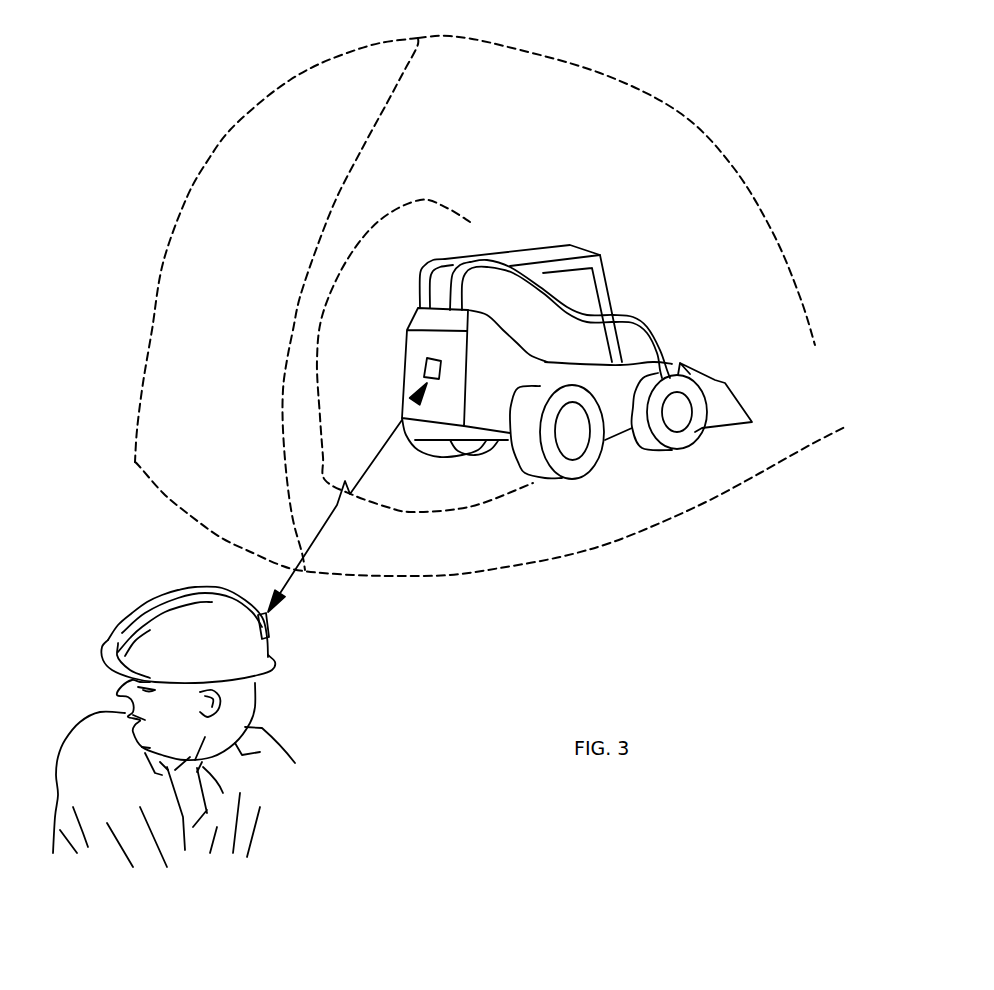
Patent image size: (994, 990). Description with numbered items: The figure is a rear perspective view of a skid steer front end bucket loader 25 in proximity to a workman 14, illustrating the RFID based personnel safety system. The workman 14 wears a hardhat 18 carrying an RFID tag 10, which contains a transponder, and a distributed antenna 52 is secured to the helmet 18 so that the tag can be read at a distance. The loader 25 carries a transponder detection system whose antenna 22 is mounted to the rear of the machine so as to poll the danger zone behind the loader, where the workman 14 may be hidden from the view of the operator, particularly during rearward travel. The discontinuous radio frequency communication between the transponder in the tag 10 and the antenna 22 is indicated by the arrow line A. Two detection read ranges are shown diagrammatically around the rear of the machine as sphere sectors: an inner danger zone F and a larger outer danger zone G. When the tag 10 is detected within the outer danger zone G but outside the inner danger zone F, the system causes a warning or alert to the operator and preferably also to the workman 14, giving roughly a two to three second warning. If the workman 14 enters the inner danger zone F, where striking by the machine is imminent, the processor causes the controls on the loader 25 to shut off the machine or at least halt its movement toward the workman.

The RFID tag 10 is at (271, 630).
The workman 14 is at (300, 788).
The hardhat 18 is at (137, 630).
The antenna 22 is at (427, 359).
The skid steer front end bucket loader 25 is at (553, 242).
The antenna 52 is at (190, 586).
The arrow line A is at (347, 497).
The inner danger zone F is at (447, 207).
The outer danger zone G is at (680, 112).